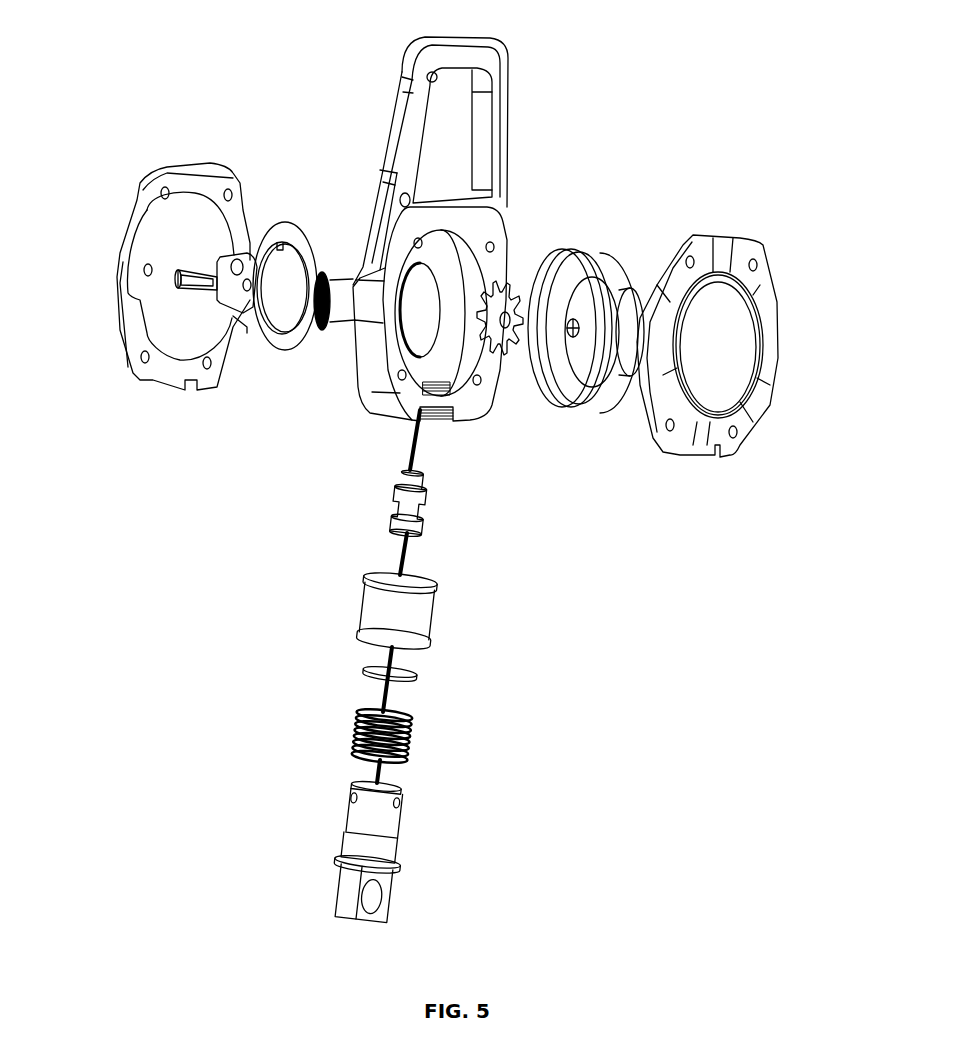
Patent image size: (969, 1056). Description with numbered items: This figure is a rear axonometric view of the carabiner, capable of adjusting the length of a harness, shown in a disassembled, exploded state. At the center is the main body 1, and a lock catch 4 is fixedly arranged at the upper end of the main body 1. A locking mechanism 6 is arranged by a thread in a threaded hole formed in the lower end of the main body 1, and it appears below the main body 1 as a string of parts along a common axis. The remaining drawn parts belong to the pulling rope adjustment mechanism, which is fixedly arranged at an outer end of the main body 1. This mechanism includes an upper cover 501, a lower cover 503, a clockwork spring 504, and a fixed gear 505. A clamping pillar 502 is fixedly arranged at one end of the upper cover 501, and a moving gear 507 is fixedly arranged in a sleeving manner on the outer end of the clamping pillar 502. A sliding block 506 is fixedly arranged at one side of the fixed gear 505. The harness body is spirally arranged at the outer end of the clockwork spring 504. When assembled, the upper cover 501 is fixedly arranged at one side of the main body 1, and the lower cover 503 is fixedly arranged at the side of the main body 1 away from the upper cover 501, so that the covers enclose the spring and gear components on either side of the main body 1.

The main body 1 is at (373, 370).
The lock catch 4 is at (503, 108).
The locking mechanism 6 is at (403, 610).
The upper cover 501 is at (155, 208).
The clamping pillar 502 is at (175, 265).
The lower cover 503 is at (768, 347).
The clockwork spring 504 is at (642, 310).
The fixed gear 505 is at (287, 233).
The sliding block 506 is at (240, 255).
The moving gear 507 is at (507, 333).